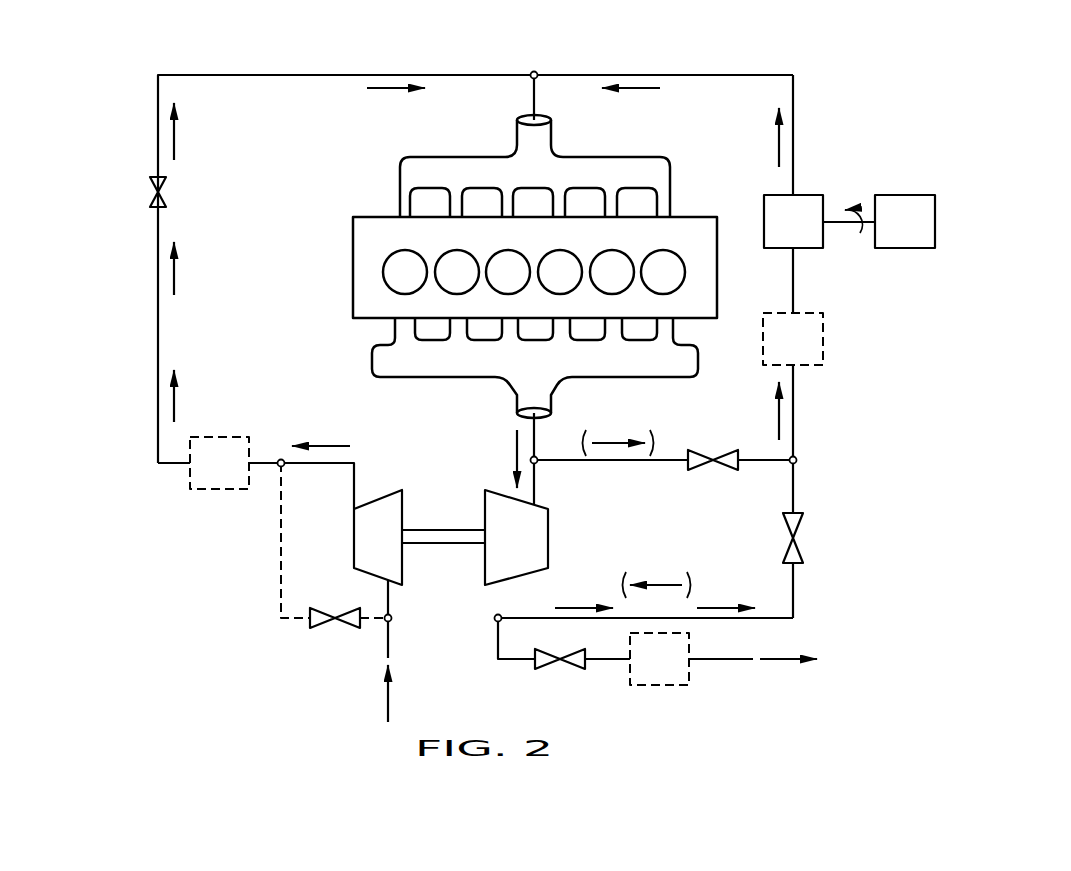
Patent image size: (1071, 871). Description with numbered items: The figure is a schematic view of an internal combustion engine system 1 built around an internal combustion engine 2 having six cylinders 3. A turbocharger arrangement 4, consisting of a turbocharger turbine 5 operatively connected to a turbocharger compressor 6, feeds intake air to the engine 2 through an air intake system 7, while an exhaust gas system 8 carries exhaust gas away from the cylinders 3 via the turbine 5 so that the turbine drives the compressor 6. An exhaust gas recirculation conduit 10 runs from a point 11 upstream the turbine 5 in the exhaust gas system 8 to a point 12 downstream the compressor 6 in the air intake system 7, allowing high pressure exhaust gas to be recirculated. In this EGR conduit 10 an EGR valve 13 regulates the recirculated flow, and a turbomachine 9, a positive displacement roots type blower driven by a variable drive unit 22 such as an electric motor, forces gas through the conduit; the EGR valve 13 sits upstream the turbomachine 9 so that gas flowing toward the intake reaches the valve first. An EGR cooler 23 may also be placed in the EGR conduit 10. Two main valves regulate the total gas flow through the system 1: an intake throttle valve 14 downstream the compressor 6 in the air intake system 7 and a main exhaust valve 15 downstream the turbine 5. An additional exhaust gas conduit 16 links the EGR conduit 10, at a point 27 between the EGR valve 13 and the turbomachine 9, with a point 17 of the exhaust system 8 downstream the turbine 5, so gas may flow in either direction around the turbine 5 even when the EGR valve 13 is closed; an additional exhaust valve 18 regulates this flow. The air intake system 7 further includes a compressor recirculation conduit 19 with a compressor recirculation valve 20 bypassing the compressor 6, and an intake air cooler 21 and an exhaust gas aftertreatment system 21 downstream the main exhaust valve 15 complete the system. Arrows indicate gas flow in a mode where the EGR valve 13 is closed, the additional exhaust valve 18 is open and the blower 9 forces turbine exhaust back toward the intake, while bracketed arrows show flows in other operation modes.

The internal combustion engine system 1 is at (165, 655).
The internal combustion engine 2 is at (693, 237).
The cylinder 3 is at (663, 272).
The turbocharger arrangement 4 is at (448, 550).
The turbocharger turbine 5 is at (553, 537).
The turbocharger compressor 6 is at (354, 537).
The air intake system 7 is at (253, 75).
The exhaust gas system 8 is at (525, 423).
The turbomachine 9 is at (827, 248).
The exhaust gas recirculation conduit 10 is at (793, 135).
The point upstream the turbocharger turbine 11 is at (529, 460).
The point downstream the turbocharger compressor 12 is at (534, 75).
The EGR valve 13 is at (724, 470).
The intake throttle valve 14 is at (150, 197).
The main exhaust valve 15 is at (550, 668).
The additional exhaust gas conduit 16 is at (793, 590).
The point downstream the turbocharger turbine 17 is at (495, 622).
The additional exhaust valve 18 is at (800, 548).
The compressor recirculation conduit 19 is at (281, 598).
The compressor recirculation valve 20 is at (340, 625).
The exhaust gas aftertreatment system 21 is at (220, 489).
The variable drive unit 22 is at (890, 195).
The EGR cooler 23 is at (823, 338).
The connection point 27 is at (797, 458).